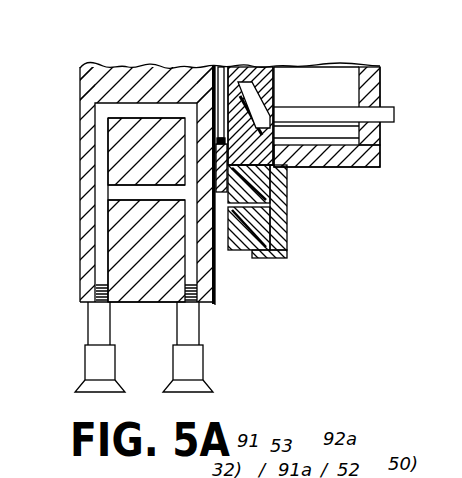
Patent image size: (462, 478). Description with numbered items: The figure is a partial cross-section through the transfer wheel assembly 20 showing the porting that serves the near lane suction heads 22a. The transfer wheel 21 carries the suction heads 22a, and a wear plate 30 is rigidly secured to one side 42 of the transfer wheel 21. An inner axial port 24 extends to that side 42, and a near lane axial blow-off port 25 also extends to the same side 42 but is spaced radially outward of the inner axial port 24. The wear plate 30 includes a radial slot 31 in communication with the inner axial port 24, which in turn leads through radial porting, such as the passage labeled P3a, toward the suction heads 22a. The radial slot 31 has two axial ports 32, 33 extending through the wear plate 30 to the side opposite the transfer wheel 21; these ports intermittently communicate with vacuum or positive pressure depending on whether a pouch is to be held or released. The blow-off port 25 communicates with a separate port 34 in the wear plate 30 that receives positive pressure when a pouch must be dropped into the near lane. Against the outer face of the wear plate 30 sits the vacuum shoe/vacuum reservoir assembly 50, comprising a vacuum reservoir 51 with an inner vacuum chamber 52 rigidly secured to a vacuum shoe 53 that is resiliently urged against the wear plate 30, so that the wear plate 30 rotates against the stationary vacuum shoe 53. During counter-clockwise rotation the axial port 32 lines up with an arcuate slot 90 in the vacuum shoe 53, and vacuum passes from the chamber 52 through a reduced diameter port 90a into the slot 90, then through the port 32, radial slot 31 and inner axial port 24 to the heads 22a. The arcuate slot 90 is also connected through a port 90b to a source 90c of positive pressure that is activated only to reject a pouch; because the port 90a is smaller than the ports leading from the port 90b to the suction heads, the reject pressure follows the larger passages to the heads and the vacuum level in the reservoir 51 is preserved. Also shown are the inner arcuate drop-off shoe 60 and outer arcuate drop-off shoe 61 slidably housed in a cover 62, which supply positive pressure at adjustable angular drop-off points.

The transfer wheel assembly 20 is at (64, 296).
The transfer wheel 21 is at (144, 297).
The near lane suction heads 22a is at (65, 390).
The inner axial port 24 is at (122, 112).
The near lane axial blow-off port 25 is at (127, 193).
The left passage P3a is at (97, 252).
The wear plate 30 is at (221, 195).
The radial slot 31 is at (198, 95).
The axial port 32 is at (222, 82).
The axial port 33 is at (210, 143).
The port in the wear plate 34 is at (200, 227).
The side of the transfer wheel 42 is at (216, 305).
The vacuum shoe/vacuum reservoir assembly 50 is at (388, 175).
The vacuum reservoir 51 is at (373, 78).
The vacuum chamber 52 is at (342, 76).
The vacuum shoe 53 is at (381, 138).
The inner arcuate drop-off shoe 60 is at (288, 197).
The outer arcuate drop-off shoe 61 is at (285, 233).
The cover 62 is at (288, 258).
The arcuate slot 90 is at (257, 66).
The reduced diameter port 90a is at (262, 100).
The port 90b is at (268, 107).
The source of positive pressure 90c is at (382, 113).